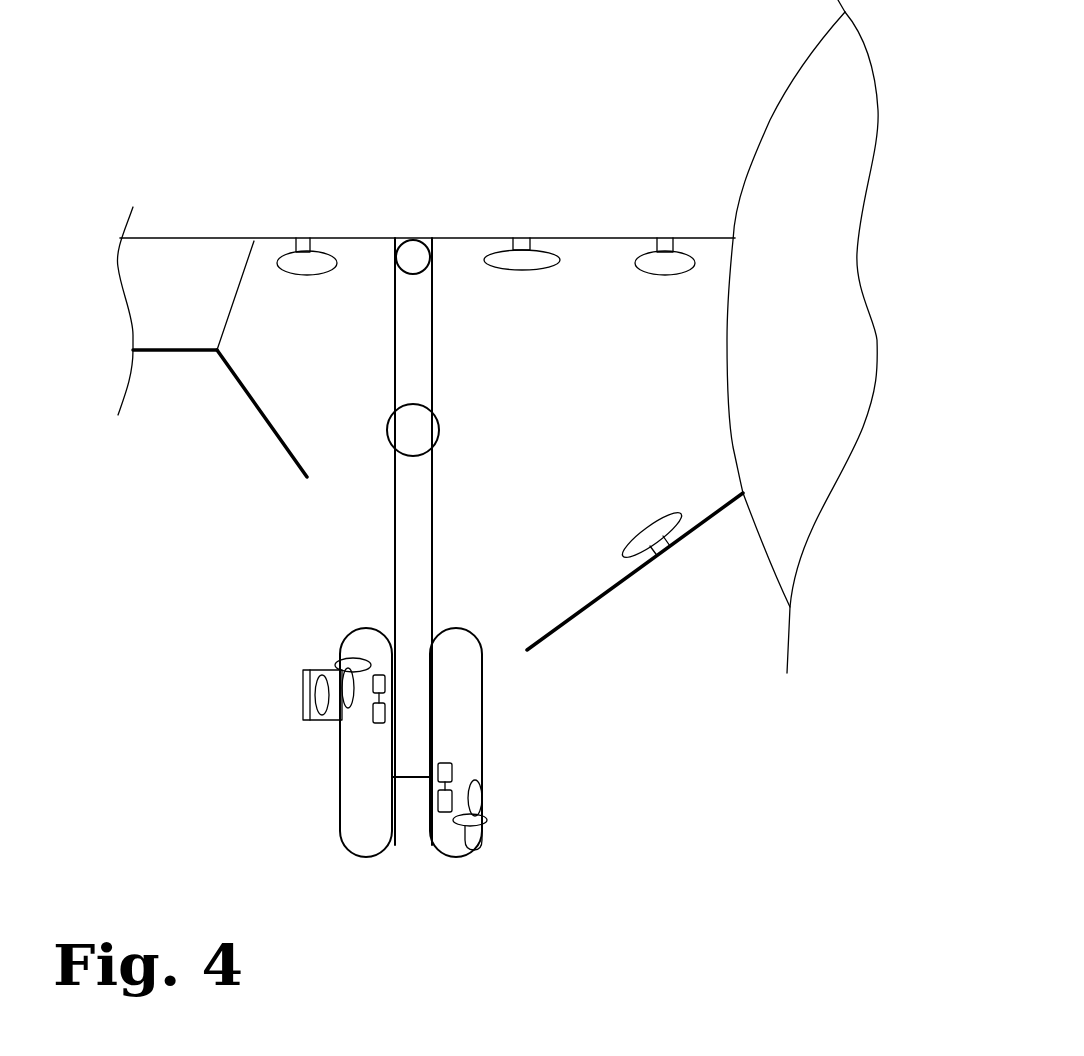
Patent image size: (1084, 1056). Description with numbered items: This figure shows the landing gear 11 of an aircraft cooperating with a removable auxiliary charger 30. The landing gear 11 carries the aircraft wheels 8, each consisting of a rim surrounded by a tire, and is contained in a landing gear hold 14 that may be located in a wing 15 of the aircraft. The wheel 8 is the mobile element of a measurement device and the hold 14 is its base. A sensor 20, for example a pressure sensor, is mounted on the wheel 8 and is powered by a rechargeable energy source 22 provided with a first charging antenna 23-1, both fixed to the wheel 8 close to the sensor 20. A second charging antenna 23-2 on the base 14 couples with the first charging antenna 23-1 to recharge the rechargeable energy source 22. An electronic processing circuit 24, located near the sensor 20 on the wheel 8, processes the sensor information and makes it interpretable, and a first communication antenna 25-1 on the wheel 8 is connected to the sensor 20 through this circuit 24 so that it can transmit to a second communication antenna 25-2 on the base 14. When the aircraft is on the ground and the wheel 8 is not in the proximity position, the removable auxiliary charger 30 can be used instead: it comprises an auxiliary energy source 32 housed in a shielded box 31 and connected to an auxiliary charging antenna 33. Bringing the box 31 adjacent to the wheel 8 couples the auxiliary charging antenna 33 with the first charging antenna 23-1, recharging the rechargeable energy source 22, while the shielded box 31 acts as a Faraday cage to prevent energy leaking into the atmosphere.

The aircraft wheel 8 is at (462, 652).
The landing gear 11 is at (392, 500).
The landing gear hold 14 is at (660, 388).
The wing 15 is at (188, 250).
The sensor 20 is at (450, 762).
The rechargeable energy source 22 is at (432, 838).
The first charging antenna 23-1 is at (338, 668).
The second charging antenna 23-2 is at (503, 258).
The electronic processing circuit 24 is at (455, 777).
The first communication antenna 25-1 is at (473, 847).
The second communication antenna 25-2 is at (292, 260).
The removable auxiliary charger 30 is at (227, 722).
The shielded box 31 is at (317, 720).
The auxiliary energy source 32 is at (303, 708).
The auxiliary charging antenna 33 is at (302, 685).